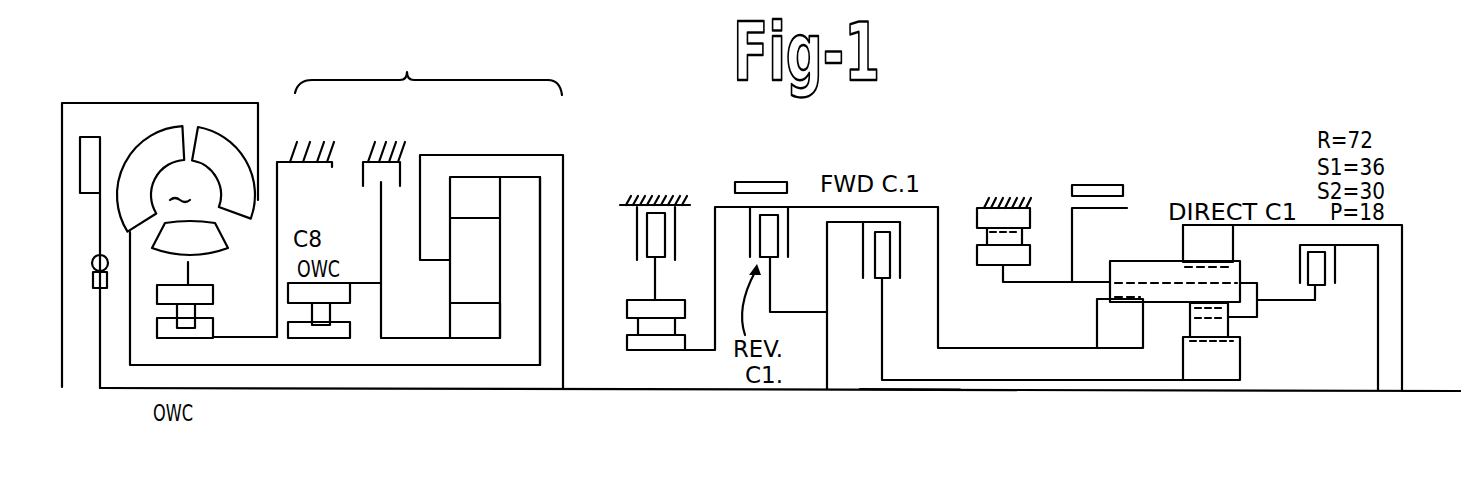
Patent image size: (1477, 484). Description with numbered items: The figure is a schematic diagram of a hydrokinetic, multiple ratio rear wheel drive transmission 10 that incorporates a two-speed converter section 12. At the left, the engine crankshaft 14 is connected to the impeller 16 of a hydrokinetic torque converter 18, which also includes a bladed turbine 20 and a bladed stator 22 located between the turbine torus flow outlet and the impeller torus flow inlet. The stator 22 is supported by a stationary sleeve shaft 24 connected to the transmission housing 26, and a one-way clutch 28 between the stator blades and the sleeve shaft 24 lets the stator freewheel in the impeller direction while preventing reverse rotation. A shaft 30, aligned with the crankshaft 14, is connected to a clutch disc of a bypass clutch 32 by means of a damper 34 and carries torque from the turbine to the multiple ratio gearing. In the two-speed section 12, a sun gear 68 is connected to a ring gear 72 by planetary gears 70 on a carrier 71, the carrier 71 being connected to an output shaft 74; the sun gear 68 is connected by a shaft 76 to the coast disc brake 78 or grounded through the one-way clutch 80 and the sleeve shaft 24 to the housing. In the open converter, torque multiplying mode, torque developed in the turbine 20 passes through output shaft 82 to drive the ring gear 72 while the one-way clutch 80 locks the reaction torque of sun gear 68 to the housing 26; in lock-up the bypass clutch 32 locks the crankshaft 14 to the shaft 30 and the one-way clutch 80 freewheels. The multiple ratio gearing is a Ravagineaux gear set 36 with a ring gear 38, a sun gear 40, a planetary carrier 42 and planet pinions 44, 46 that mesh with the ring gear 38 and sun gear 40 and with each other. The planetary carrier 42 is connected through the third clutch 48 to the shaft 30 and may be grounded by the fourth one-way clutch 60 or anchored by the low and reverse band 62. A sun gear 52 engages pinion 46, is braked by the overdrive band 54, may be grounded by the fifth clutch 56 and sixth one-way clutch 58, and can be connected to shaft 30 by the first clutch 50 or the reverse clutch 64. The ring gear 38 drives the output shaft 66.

The rear wheel drive transmission 10 is at (928, 156).
The two-speed converter section 12 is at (407, 72).
The crankshaft 14 is at (63, 387).
The impeller 16 is at (250, 221).
The hydrokinetic torque converter 18 is at (182, 185).
The bladed turbine 20 is at (140, 157).
The bladed stator 22 is at (203, 255).
The stationary sleeve shaft 24 is at (238, 330).
The transmission housing 26 is at (314, 142).
The one-way clutch 28 is at (193, 321).
The shaft 30 is at (354, 389).
The bypass clutch 32 is at (96, 195).
The damper 34 is at (93, 268).
The Ravagineaux gear set 36 is at (1266, 311).
The ring gear 38 is at (1183, 240).
The sun gear 40 is at (1242, 367).
The planetary carrier 42 is at (1258, 291).
The planet pinion 44 is at (1190, 320).
The planet pinion 46 is at (1120, 258).
The C3 clutch 48 is at (1335, 262).
The C1 clutch 50 is at (900, 251).
The sun gear 52 is at (1104, 348).
The B1 overdrive band 54 is at (735, 188).
The C5 clutch 56 is at (637, 250).
The C6 one-way clutch 58 is at (675, 347).
The C4 one-way clutch 60 is at (985, 200).
The B2 low and reverse band 62 is at (1123, 190).
The C2 reverse clutch 64 is at (790, 233).
The output shaft 66 is at (1403, 225).
The sun gear 68 is at (465, 330).
The planetary gears 70 is at (487, 265).
The carrier 71 is at (490, 155).
The ring gear 72 is at (500, 208).
The output shaft 74 is at (906, 390).
The shaft 76 is at (405, 333).
The C7 coast disc brake 78 is at (383, 143).
The C8 one-way clutch 80 is at (338, 290).
The output shaft 82 is at (478, 367).